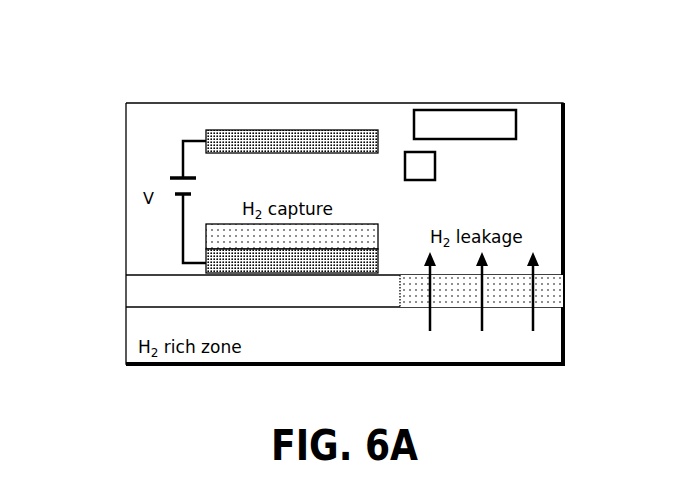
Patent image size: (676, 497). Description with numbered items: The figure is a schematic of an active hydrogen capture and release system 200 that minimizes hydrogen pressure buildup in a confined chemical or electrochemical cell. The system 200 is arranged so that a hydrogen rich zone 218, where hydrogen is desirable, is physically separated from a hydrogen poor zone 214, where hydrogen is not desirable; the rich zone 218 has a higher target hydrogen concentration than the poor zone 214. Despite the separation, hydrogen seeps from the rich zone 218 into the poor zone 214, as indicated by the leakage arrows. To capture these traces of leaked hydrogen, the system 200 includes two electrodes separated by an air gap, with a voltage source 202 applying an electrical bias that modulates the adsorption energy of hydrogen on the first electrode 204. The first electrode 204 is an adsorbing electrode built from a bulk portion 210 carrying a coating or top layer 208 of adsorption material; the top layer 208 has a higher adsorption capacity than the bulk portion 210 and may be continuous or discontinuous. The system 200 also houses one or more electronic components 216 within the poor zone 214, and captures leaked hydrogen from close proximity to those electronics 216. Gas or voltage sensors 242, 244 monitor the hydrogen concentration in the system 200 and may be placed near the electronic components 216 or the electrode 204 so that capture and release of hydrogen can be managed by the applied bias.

The active hydrogen capture and release system 200 is at (351, 199).
The voltage source 202 is at (166, 158).
The first electrode 204 is at (205, 268).
The coating or top layer 208 is at (205, 238).
The bulk portion 210 is at (295, 290).
The hydrogen poor zone 214 is at (536, 148).
The electronic components 216 is at (467, 128).
The hydrogen rich zone 218 is at (528, 345).
The gas or voltage sensor 242 is at (532, 191).
The gas or voltage sensor 244 is at (438, 165).